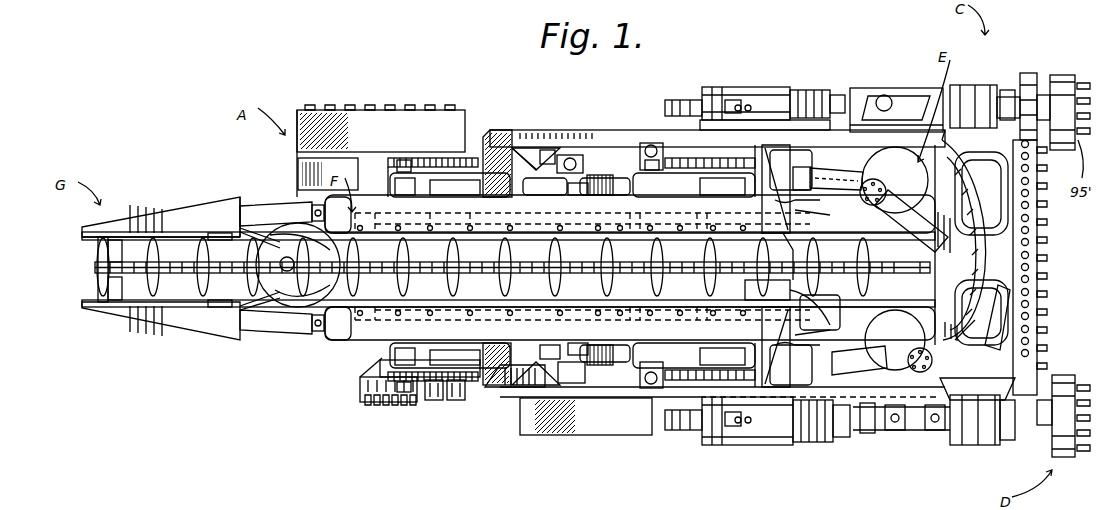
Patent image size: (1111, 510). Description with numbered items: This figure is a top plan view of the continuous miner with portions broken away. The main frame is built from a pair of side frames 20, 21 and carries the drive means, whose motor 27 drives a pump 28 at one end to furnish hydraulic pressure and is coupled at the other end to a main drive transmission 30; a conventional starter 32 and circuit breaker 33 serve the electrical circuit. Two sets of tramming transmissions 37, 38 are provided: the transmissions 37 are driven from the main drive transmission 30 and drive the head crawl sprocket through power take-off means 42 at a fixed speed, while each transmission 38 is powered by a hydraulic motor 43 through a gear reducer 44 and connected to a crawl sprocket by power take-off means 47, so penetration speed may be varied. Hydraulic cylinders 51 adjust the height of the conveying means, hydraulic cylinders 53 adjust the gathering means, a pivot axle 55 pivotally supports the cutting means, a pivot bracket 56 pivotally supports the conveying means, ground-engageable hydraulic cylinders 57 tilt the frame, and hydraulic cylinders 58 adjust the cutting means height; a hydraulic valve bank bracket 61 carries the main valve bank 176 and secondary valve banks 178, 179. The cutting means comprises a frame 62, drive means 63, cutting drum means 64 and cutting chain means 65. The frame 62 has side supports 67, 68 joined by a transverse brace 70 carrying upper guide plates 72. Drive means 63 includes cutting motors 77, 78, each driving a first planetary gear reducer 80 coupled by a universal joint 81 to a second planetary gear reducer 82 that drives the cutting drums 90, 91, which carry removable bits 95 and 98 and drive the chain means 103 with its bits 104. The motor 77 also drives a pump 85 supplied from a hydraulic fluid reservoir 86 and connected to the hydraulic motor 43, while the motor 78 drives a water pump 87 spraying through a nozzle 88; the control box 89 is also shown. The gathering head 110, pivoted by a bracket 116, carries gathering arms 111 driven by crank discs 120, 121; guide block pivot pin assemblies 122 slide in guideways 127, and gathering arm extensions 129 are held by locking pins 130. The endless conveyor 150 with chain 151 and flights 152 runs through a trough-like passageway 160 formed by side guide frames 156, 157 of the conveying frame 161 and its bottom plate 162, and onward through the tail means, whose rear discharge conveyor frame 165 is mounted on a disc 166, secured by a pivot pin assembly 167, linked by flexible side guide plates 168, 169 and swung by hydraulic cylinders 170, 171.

The side frame 20 is at (553, 362).
The side frame 21 is at (558, 160).
The motor 27 is at (510, 232).
The pump 28 is at (490, 258).
The main drive transmission 30 is at (660, 232).
The starter 32 is at (388, 120).
The circuit breaker 33 is at (300, 170).
The tramming transmission 37 is at (690, 195).
The tramming transmission 38 is at (440, 170).
The power take-off means 42 is at (820, 157).
The hydraulic motor 43 is at (607, 198).
The gear reducer 44 is at (548, 200).
The power take-off means 47 is at (425, 160).
The hydraulic cylinder 51 is at (395, 193).
The hydraulic cylinder 53 is at (757, 183).
The pivot axle 55 is at (505, 110).
The pivot bracket 56 is at (785, 240).
The hydraulic cylinder 57 is at (565, 158).
The hydraulic cylinder 58 is at (646, 143).
The hydraulic valve bank bracket 61 is at (420, 402).
The frame 62 is at (969, 280).
The drive means 63 is at (821, 65).
The cutting drum means 64 is at (1064, 159).
The cutting chain means 65 is at (1056, 298).
The side support 67 is at (570, 398).
The side support 68 is at (541, 130).
The transverse brace 70 is at (972, 210).
The upper guide plate 72 is at (1030, 282).
The cutting motor 77 is at (738, 446).
The cutting motor 78 is at (770, 70).
The first planetary gear reducer 80 is at (820, 90).
The universal joint 81 is at (905, 432).
The second planetary gear reducer 82 is at (995, 72).
The pump 85 is at (680, 430).
The hydraulic fluid reservoir 86 is at (600, 436).
The water pump 87 is at (680, 103).
The nozzle 88 is at (965, 172).
The control box 89 is at (887, 100).
The cutting drum 90 is at (1060, 455).
The cutting drum 91 is at (1045, 85).
The removable bit 95 is at (1090, 440).
The removable bit 98 is at (1088, 77).
The chain means 103 is at (1028, 75).
The bit 104 is at (1042, 225).
The gathering head 110 is at (853, 322).
The gathering arm 111 is at (880, 218).
The bracket 116 is at (783, 200).
The gathering head crank disc 120 is at (907, 338).
The gathering head crank disc 121 is at (903, 169).
The guide block pivot pin assembly 122 is at (820, 220).
The guideway 127 is at (836, 175).
The gathering arm extension 129 is at (950, 248).
The locking pin 130 is at (918, 210).
The endless conveyor 150 is at (76, 256).
The chain 151 is at (190, 250).
The flight 152 is at (207, 252).
The side guide frame 156 is at (355, 197).
The side guide frame 157 is at (328, 340).
The trough-like passageway 160 is at (185, 300).
The conveying frame 161 is at (344, 357).
The bottom plate 162 is at (440, 255).
The rear discharge conveyor frame 165 is at (215, 335).
The disc 166 is at (292, 335).
The pivot pin assembly 167 is at (290, 270).
The flexible side guide plate 168 is at (242, 222).
The flexible side guide plate 169 is at (238, 307).
The hydraulic cylinder 170 is at (272, 335).
The hydraulic cylinder 171 is at (262, 200).
The main valve bank 176 is at (365, 400).
The secondary valve bank 178 is at (436, 402).
The secondary valve bank 179 is at (452, 402).